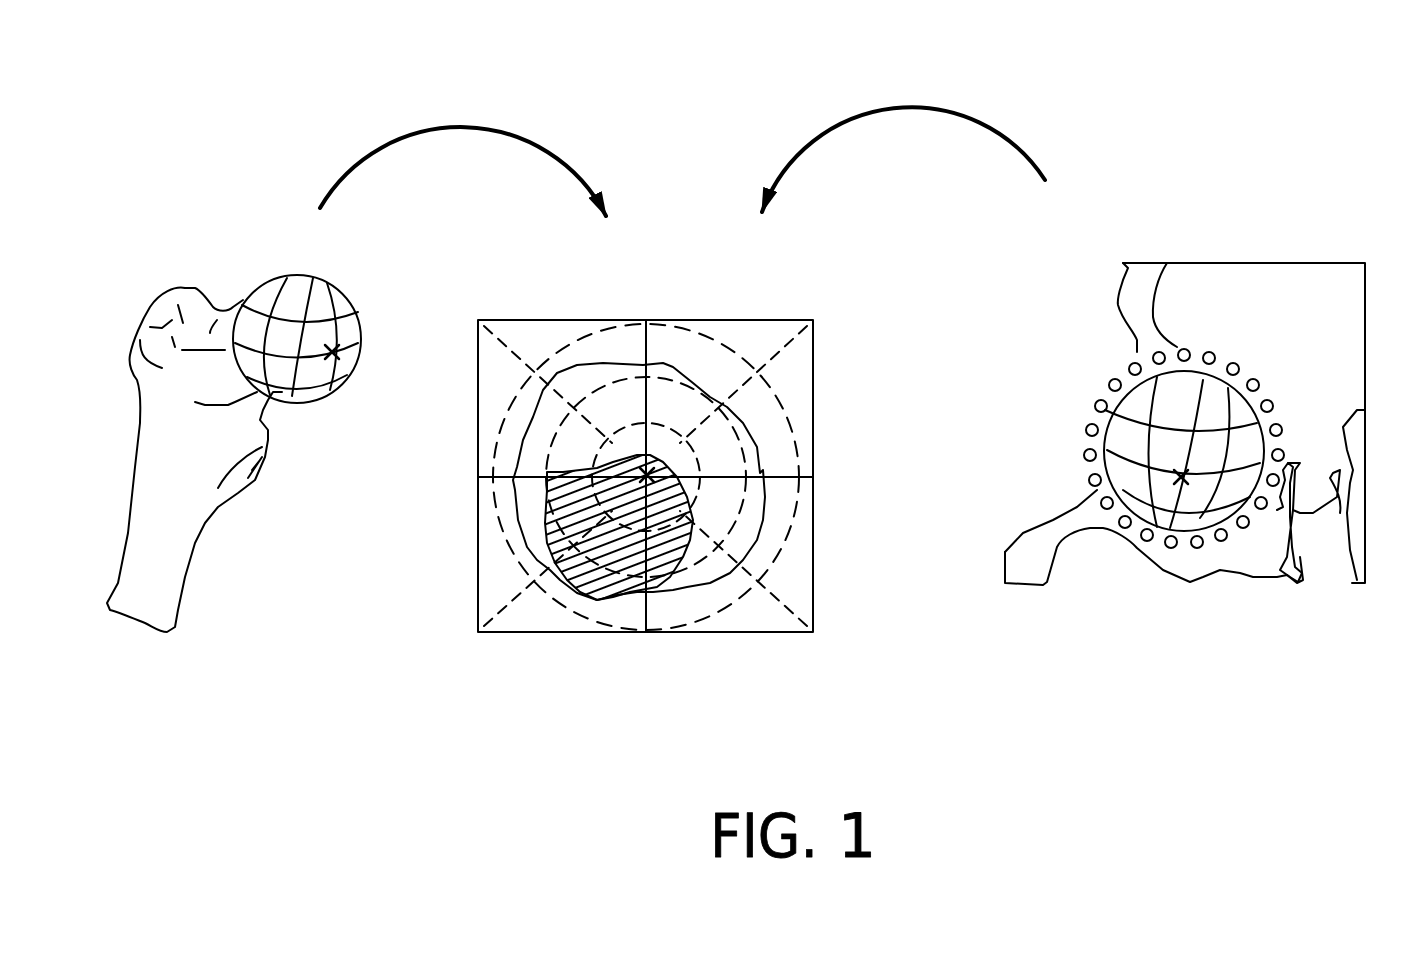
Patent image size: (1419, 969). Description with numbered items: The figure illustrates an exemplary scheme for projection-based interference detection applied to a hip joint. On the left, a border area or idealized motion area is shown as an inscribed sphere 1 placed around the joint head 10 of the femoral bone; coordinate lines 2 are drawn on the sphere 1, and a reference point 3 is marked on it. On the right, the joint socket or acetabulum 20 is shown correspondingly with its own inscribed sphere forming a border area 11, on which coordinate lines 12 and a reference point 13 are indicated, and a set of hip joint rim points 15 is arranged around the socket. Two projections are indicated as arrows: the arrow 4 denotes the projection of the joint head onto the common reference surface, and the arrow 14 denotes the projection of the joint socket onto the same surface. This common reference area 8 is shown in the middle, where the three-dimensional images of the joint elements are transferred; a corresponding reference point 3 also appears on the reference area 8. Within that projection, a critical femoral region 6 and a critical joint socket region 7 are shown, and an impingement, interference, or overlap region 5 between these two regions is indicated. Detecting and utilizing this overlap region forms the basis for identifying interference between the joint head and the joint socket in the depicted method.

The inscribed sphere 1 is at (284, 314).
The coordinate lines 2 is at (268, 348).
The reference points 3 is at (330, 374).
The projection for the joint head 4 is at (463, 150).
The impingement region 5 is at (576, 605).
The critical femoral region 6 is at (526, 344).
The critical joint socket region 7 is at (642, 557).
The reference area 8 is at (773, 314).
The joint head 10 is at (239, 295).
The border area 11 is at (1186, 372).
The coordinate lines 12 is at (795, 534).
The reference point 13 is at (1179, 488).
The projection for the joint socket 14 is at (903, 138).
The hip joint rim points 15 is at (1240, 356).
The joint socket 20 is at (1217, 430).